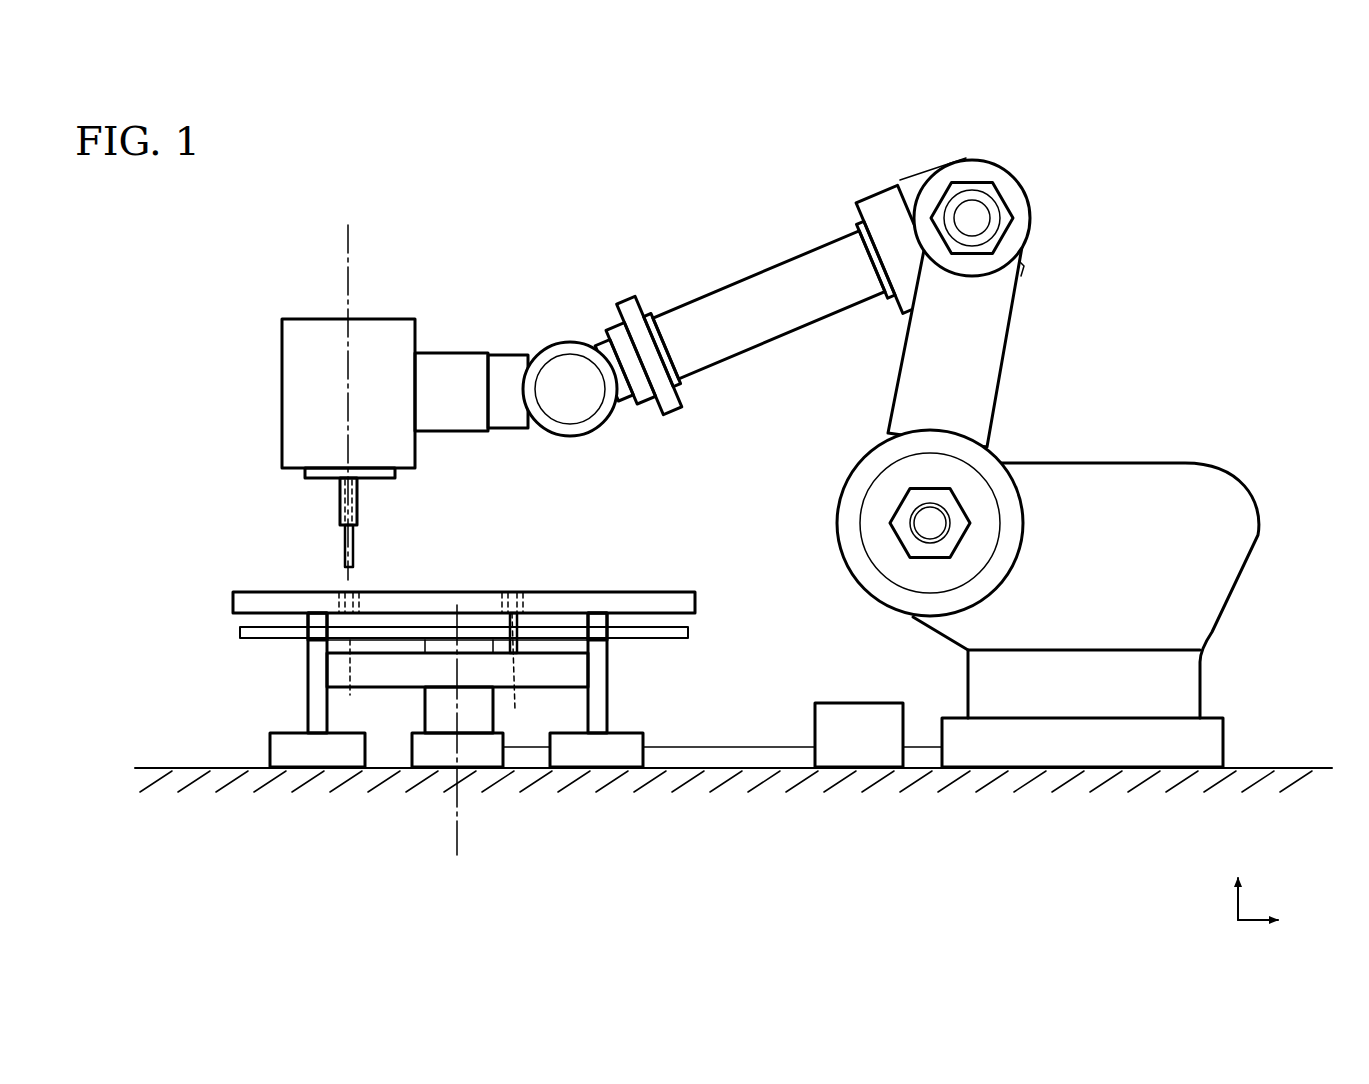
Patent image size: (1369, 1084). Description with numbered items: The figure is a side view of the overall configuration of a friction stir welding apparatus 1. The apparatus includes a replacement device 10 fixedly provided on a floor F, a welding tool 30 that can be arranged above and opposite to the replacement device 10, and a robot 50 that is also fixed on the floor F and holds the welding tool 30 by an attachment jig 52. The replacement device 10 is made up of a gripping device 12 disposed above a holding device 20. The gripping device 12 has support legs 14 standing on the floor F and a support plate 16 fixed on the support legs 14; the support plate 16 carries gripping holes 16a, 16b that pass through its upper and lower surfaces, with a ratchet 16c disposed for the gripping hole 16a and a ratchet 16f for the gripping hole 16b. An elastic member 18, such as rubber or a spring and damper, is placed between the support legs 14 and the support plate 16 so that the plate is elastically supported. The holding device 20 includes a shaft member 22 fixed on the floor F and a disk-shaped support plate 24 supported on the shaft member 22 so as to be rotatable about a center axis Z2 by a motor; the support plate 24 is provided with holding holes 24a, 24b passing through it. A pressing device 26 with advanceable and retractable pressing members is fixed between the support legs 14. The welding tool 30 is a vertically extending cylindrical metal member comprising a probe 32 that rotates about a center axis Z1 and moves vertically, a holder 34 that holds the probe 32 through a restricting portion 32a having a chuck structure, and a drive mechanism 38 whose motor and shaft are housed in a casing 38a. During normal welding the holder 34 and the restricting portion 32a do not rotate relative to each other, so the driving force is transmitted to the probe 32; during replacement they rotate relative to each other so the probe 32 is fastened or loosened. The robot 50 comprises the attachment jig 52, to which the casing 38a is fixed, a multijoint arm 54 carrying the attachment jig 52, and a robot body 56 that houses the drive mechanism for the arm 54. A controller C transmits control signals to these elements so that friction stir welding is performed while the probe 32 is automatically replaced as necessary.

The friction stir welding apparatus 1 is at (655, 207).
The replacement device 10 is at (612, 576).
The gripping device 12 is at (238, 575).
The support legs 14 is at (313, 704).
The support plate 16 is at (548, 600).
The gripping hole 16a is at (357, 590).
The gripping hole 16b is at (517, 590).
The ratchet 16c is at (335, 590).
The ratchet 16f is at (500, 590).
The elastic member 18 is at (312, 630).
The holding device 20 is at (700, 621).
The shaft member 22 is at (440, 719).
The support plate 24 is at (258, 631).
The holding hole 24a is at (355, 681).
The holding hole 24b is at (521, 673).
The pressing device 26 is at (456, 750).
The welding tool 30 is at (248, 398).
The probe 32 is at (357, 546).
The restricting portion 32a is at (362, 518).
The holder 34 is at (340, 493).
The drive mechanism 38 is at (404, 318).
The casing 38a is at (405, 345).
The robot 50 is at (1072, 230).
The attachment jig 52 is at (483, 356).
The arm 54 is at (760, 232).
The robot body 56 is at (1200, 490).
The center axis Z1 is at (352, 258).
The center axis Z2 is at (463, 842).
The controller C is at (860, 712).
The floor F is at (1272, 778).